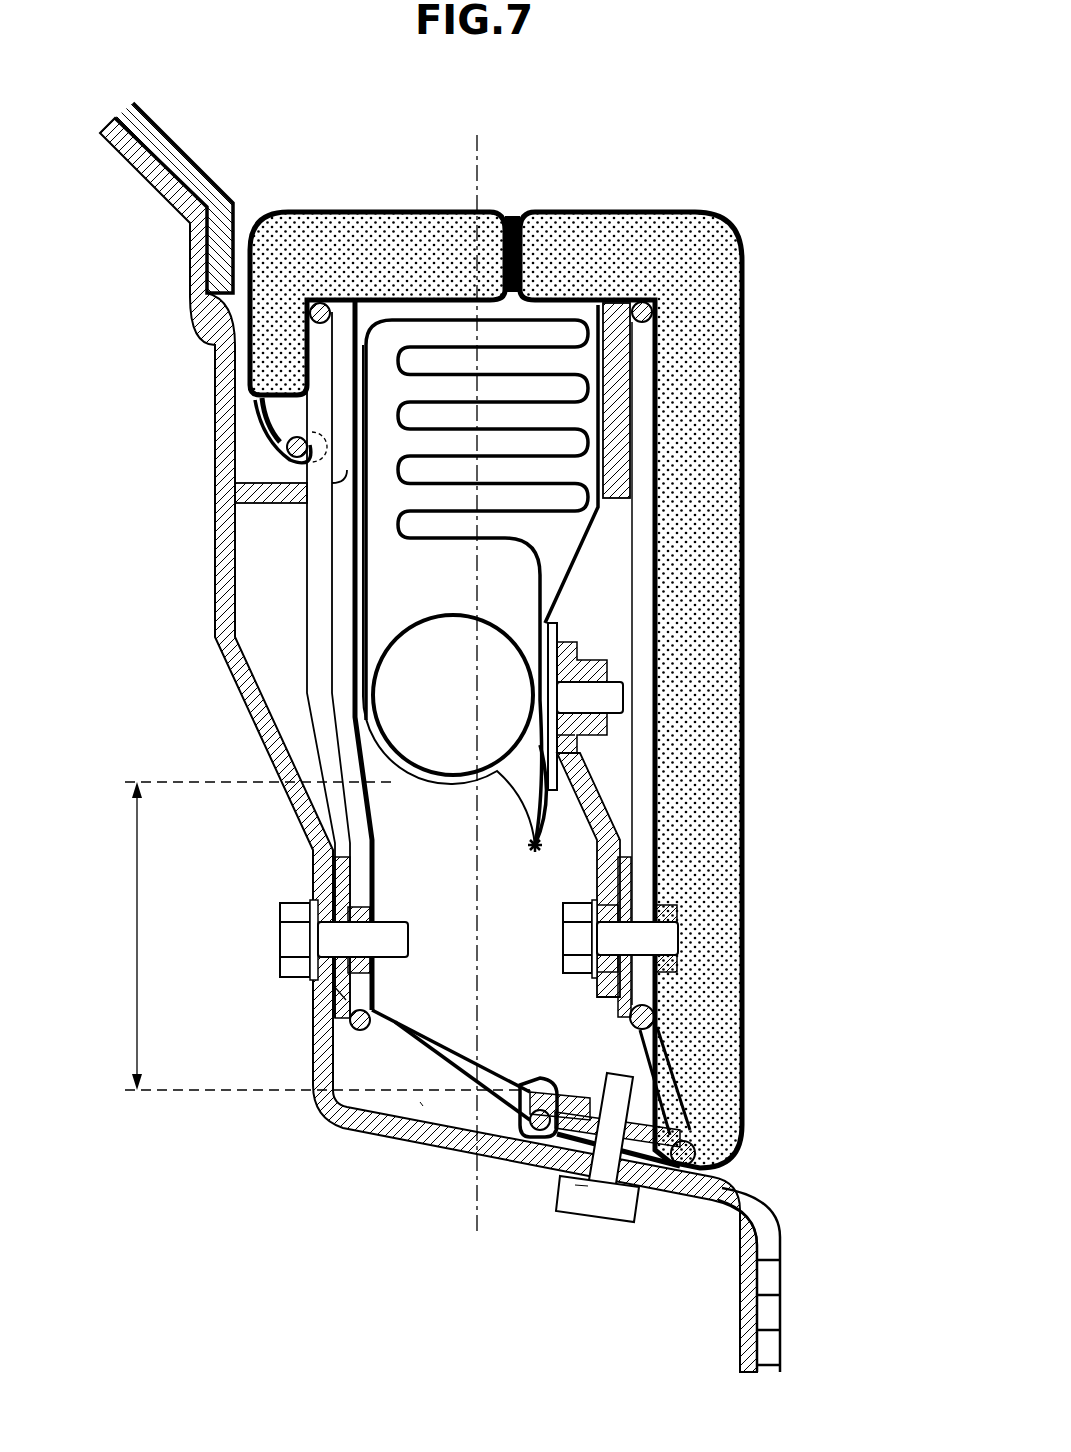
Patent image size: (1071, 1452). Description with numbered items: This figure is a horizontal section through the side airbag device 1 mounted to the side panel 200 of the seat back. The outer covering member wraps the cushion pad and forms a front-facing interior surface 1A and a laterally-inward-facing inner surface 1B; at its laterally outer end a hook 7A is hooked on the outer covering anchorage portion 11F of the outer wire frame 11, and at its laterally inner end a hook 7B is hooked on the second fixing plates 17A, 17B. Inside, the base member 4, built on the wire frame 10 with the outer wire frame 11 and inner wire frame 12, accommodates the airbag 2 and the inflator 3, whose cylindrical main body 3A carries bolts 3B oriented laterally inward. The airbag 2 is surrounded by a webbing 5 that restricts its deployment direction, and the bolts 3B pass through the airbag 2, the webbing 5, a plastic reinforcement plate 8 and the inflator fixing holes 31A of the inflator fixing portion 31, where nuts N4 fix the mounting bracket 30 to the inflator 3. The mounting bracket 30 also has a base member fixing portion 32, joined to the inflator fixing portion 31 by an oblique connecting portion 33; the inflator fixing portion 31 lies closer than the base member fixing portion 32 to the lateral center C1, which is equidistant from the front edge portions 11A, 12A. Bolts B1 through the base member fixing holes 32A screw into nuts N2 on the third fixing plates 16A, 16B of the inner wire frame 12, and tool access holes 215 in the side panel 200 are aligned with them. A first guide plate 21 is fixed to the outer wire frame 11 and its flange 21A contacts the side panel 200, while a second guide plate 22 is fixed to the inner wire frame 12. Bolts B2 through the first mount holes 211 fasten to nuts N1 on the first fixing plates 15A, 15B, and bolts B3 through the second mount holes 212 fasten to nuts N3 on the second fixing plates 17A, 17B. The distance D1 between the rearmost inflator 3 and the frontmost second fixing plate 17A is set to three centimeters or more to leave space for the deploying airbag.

The side airbag device 1 is at (537, 636).
The interior surface 1A is at (377, 274).
The inner surface 1B is at (537, 660).
The airbag 2 is at (480, 589).
The inflator 3 is at (351, 695).
The main body 3A is at (395, 712).
The bolts 3B is at (608, 700).
The base member 4 is at (418, 1102).
The webbing 5 is at (500, 800).
The hook 7A is at (283, 455).
The hook 7B is at (528, 1090).
The plastic reinforcement plate 8 is at (547, 783).
The wire frame 10 is at (403, 1055).
The outer wire frame 11 is at (305, 563).
The front edge portion 11A is at (318, 303).
The outer covering anchorage portion 11F is at (262, 420).
The inner wire frame 12 is at (651, 670).
The front edge portion 12A is at (655, 305).
The first fixing plate 15A is at (255, 935).
The first fixing plate 15B is at (340, 875).
The third fixing plate 16A is at (735, 937).
The third fixing plate 16B is at (628, 885).
The second fixing plate 17A is at (639, 1187).
The second fixing plate 17B is at (657, 1135).
The first guide plate 21 is at (247, 665).
The flange 21A is at (275, 493).
The second guide plate 22 is at (620, 395).
The mounting bracket 30 is at (672, 875).
The inflator fixing portion 31 is at (560, 645).
The inflator fixing holes 31A is at (577, 748).
The base member fixing portion 32 is at (608, 1000).
The base member fixing holes 32A is at (612, 940).
The connecting portion 33 is at (592, 790).
The side panel 200 is at (440, 737).
The first mount holes 211 is at (318, 940).
The second mount holes 212 is at (582, 1195).
The tool access holes 215 is at (330, 990).
The bolts B1 is at (568, 940).
The bolts B2 is at (292, 905).
The bolts B3 is at (605, 1222).
The nut N1 is at (357, 910).
The nut N2 is at (668, 962).
The nut N3 is at (587, 1085).
The nuts N4 is at (577, 672).
The center C1 is at (474, 673).
The distance D1 is at (319, 936).